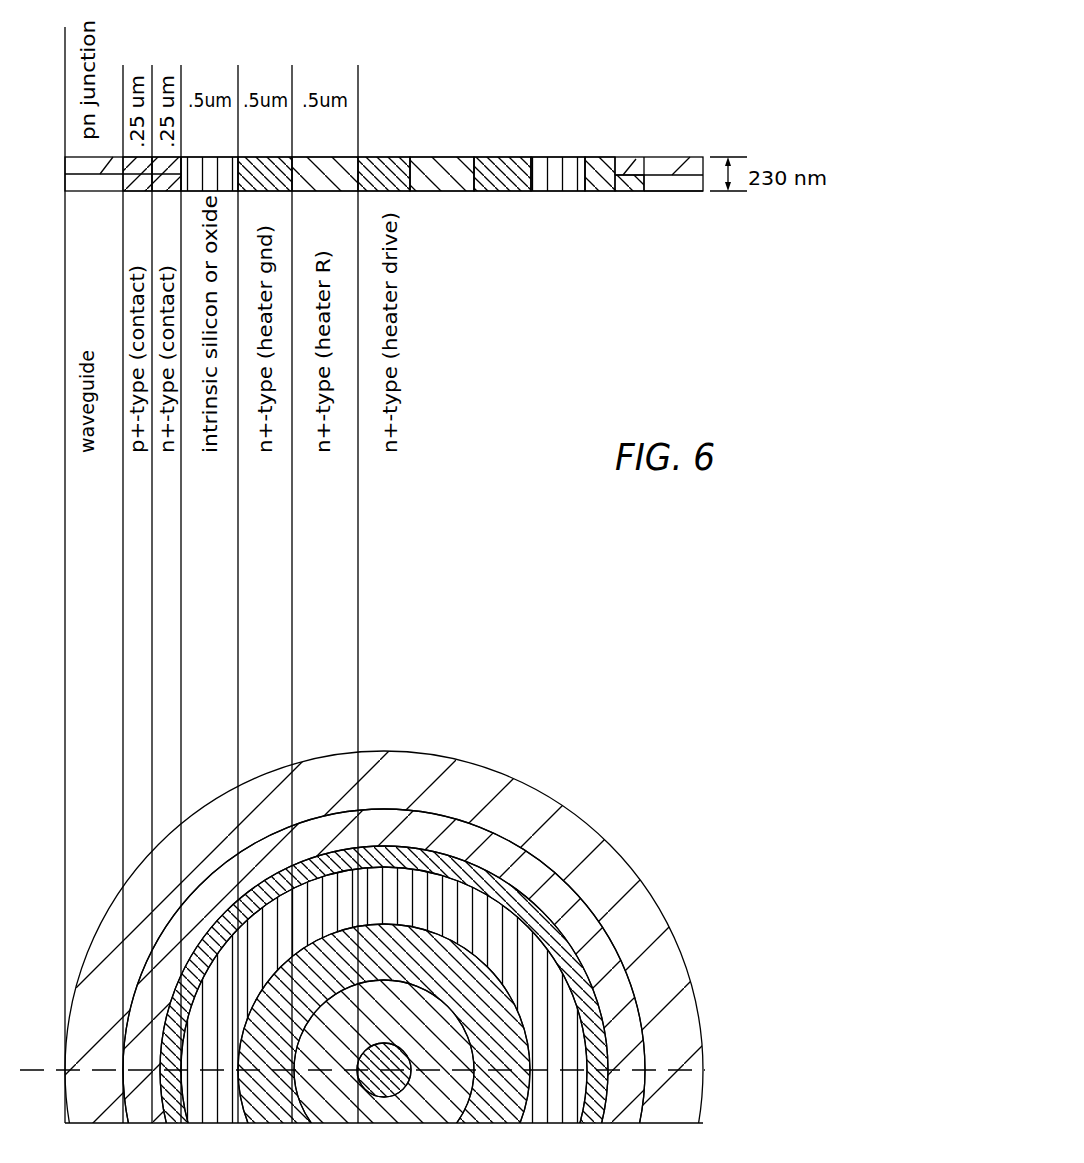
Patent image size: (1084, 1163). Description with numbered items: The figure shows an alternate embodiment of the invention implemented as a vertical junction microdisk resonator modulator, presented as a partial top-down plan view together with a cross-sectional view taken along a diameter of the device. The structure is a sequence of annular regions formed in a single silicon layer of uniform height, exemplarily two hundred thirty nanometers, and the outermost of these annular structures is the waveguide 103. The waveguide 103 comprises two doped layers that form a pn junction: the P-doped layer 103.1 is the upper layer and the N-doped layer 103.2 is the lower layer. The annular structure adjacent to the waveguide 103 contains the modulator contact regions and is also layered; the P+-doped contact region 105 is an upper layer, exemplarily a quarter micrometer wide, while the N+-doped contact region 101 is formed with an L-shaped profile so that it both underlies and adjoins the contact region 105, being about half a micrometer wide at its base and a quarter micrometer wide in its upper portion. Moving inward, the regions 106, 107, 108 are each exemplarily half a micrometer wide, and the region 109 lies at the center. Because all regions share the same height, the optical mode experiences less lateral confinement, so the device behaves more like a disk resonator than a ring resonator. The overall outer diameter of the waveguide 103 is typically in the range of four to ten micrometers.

The N+-doped contact region 101 is at (595, 182).
The waveguide 103 is at (497, 710).
The P-doped layer 103.1 is at (688, 165).
The N-doped layer 103.2 is at (673, 180).
The P+-doped contact region 105 is at (627, 167).
The region 106 is at (675, 805).
The region 107 is at (727, 875).
The region 108 is at (750, 972).
The region 109 is at (748, 1098).